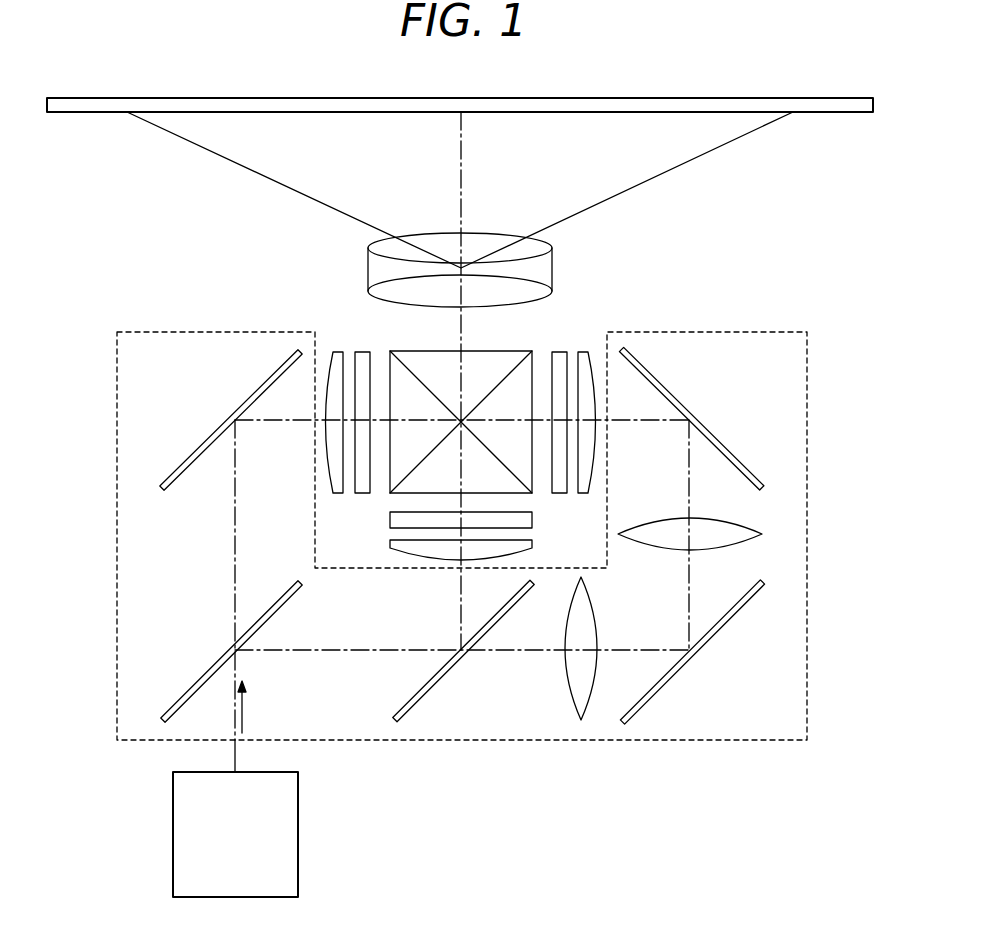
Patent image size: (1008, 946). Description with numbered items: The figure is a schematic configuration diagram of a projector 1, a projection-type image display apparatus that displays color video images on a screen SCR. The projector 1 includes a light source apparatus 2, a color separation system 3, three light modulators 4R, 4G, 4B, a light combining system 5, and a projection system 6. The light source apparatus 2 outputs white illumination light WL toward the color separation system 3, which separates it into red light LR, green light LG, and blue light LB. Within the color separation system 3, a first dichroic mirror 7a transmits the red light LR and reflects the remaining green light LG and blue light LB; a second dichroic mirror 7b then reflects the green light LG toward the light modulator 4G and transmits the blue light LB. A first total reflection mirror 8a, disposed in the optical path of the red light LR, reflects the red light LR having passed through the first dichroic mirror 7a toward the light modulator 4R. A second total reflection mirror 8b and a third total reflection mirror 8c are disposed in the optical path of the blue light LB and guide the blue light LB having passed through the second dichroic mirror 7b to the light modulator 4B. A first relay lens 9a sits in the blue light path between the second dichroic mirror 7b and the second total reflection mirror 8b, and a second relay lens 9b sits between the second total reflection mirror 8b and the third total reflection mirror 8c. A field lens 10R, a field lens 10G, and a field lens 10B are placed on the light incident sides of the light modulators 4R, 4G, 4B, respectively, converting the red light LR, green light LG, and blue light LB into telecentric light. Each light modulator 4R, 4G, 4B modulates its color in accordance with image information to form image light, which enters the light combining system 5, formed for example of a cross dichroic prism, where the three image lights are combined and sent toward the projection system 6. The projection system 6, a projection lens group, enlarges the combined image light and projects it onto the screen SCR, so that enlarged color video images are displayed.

The projector 1 is at (812, 308).
The light source apparatus 2 is at (298, 868).
The color separation system 3 is at (117, 480).
The light modulator 4R is at (363, 350).
The light modulator 4G is at (390, 520).
The light modulator 4B is at (560, 350).
The light combining system 5 is at (487, 357).
The projection system 6 is at (440, 245).
The first dichroic mirror 7a is at (200, 682).
The second dichroic mirror 7b is at (440, 682).
The first total reflection mirror 8a is at (207, 437).
The second total reflection mirror 8b is at (717, 632).
The third total reflection mirror 8c is at (720, 437).
The first relay lens 9a is at (565, 672).
The second relay lens 9b is at (750, 524).
The field lens 10R is at (340, 350).
The field lens 10G is at (390, 542).
The field lens 10B is at (580, 350).
The screen SCR is at (840, 113).
The illumination light WL is at (245, 713).
The red light LR is at (235, 560).
The green light LG is at (462, 605).
The blue light LB is at (689, 598).